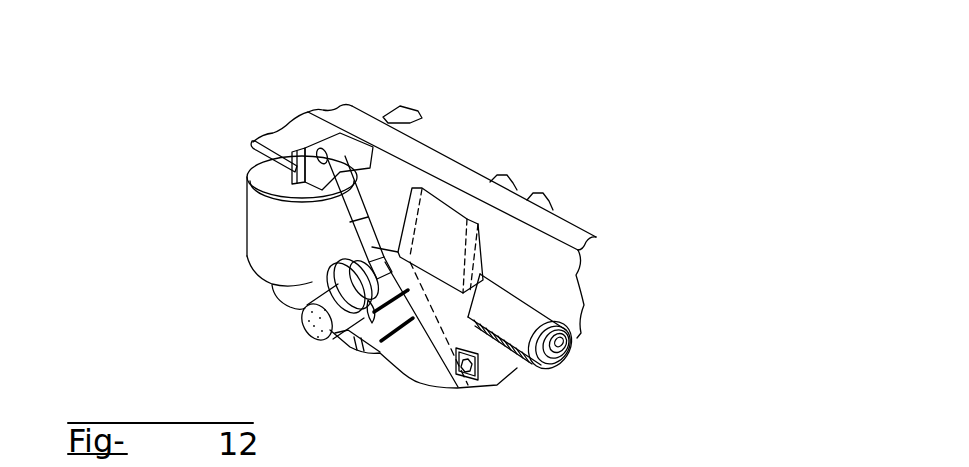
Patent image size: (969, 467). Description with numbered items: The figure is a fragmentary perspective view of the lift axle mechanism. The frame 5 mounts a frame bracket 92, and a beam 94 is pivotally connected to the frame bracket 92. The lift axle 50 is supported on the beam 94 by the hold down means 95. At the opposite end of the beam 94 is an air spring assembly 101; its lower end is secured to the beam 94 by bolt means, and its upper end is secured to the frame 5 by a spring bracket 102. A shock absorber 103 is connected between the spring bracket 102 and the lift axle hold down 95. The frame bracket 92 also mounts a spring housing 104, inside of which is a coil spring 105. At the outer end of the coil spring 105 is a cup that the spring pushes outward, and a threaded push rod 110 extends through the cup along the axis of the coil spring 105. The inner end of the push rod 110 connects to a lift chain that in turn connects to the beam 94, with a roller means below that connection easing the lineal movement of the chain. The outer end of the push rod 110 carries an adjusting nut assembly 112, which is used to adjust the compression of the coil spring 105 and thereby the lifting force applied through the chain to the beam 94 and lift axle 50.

The frame 5 is at (332, 100).
The lift axle 50 is at (306, 335).
The frame bracket 92 is at (443, 243).
The beam 94 is at (411, 350).
The hold down means 95 is at (363, 343).
The air spring assembly 101 is at (275, 237).
The spring bracket 102 is at (251, 143).
The shock absorber 103 is at (357, 198).
The spring housing 104 is at (523, 314).
The coil spring 105 is at (497, 354).
The push rod 110 is at (565, 347).
The adjusting nut assembly 112 is at (558, 352).